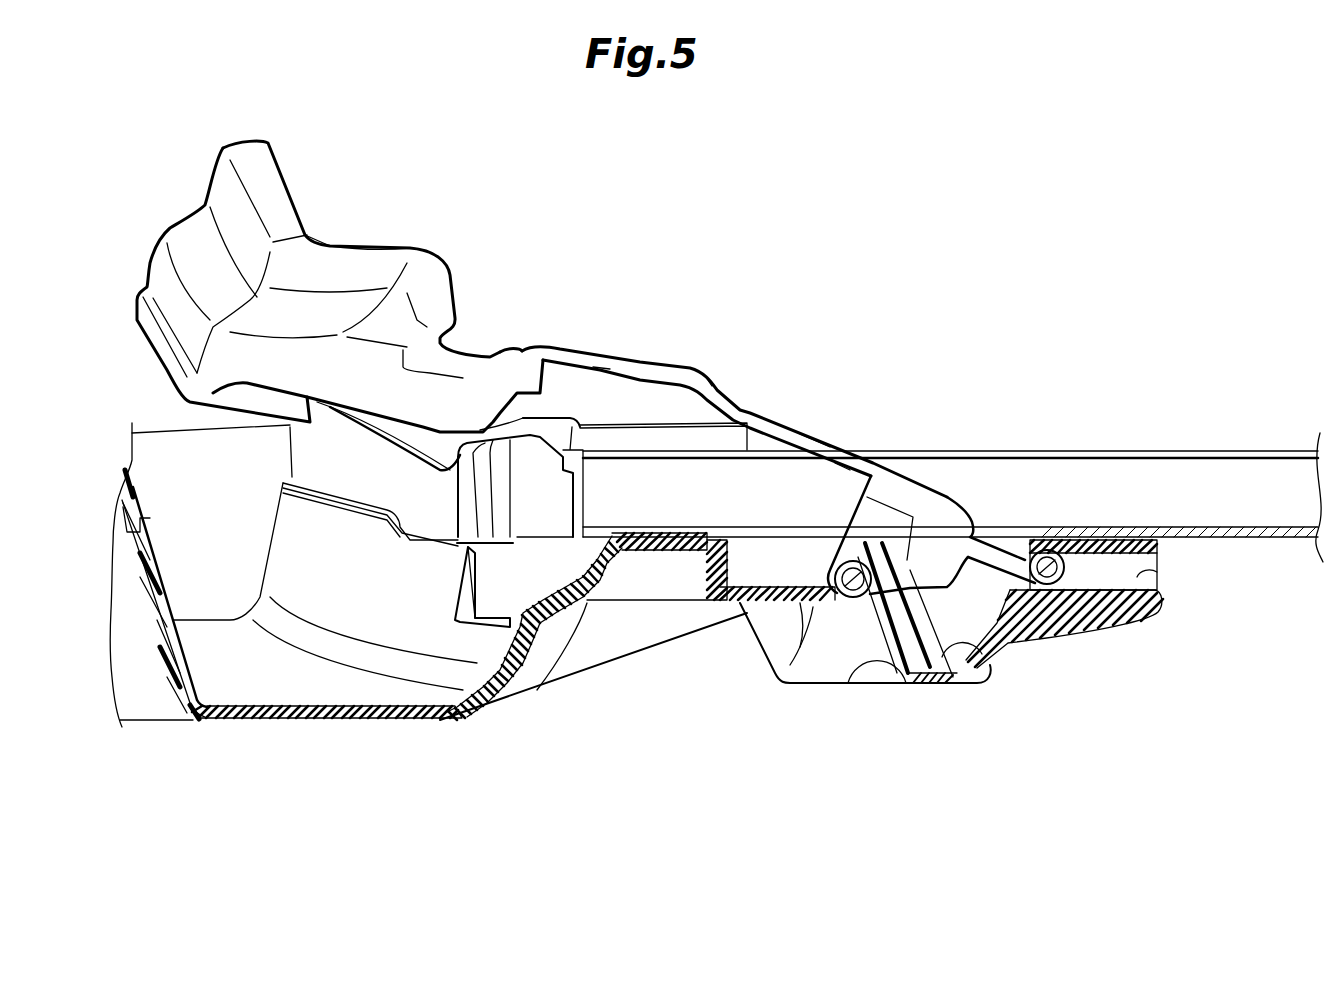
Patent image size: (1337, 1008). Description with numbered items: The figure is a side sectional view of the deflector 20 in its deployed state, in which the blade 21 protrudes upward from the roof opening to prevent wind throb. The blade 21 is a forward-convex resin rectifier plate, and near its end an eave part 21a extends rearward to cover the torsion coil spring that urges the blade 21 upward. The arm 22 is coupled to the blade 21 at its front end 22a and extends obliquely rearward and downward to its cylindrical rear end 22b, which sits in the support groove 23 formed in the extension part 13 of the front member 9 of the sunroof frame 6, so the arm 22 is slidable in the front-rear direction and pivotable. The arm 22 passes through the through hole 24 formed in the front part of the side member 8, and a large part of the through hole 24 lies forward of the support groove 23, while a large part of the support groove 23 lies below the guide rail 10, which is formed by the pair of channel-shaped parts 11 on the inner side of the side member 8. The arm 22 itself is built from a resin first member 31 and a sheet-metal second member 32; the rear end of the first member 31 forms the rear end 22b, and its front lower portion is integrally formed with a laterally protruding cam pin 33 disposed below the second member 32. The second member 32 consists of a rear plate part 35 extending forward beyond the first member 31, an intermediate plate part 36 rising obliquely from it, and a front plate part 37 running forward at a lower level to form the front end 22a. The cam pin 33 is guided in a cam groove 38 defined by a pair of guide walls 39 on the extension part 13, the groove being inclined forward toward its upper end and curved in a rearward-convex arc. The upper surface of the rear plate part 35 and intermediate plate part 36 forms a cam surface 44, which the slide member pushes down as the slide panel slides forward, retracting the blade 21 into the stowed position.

The sunroof frame 6 is at (594, 670).
The side member 8 is at (1158, 450).
The front member 9 is at (352, 720).
The guide rail 10 is at (1205, 498).
The channel-shaped parts 11 is at (1110, 450).
The extension part 13 is at (1093, 620).
The deflector 20 is at (552, 184).
The blade 21 is at (354, 240).
The eave part 21a is at (388, 258).
The arm 22 is at (628, 360).
The front end 22a is at (505, 348).
The rear end 22b is at (1065, 552).
The support groove 23 is at (1140, 577).
The through hole 24 is at (1040, 532).
The first member 31 is at (893, 490).
The second member 32 is at (817, 447).
The cam pin 33 is at (790, 665).
The rear plate part 35 is at (840, 460).
The intermediate plate part 36 is at (720, 408).
The front plate part 37 is at (596, 370).
The cam groove 38 is at (910, 677).
The guide walls 39 is at (870, 650).
The cam surface 44 is at (717, 388).